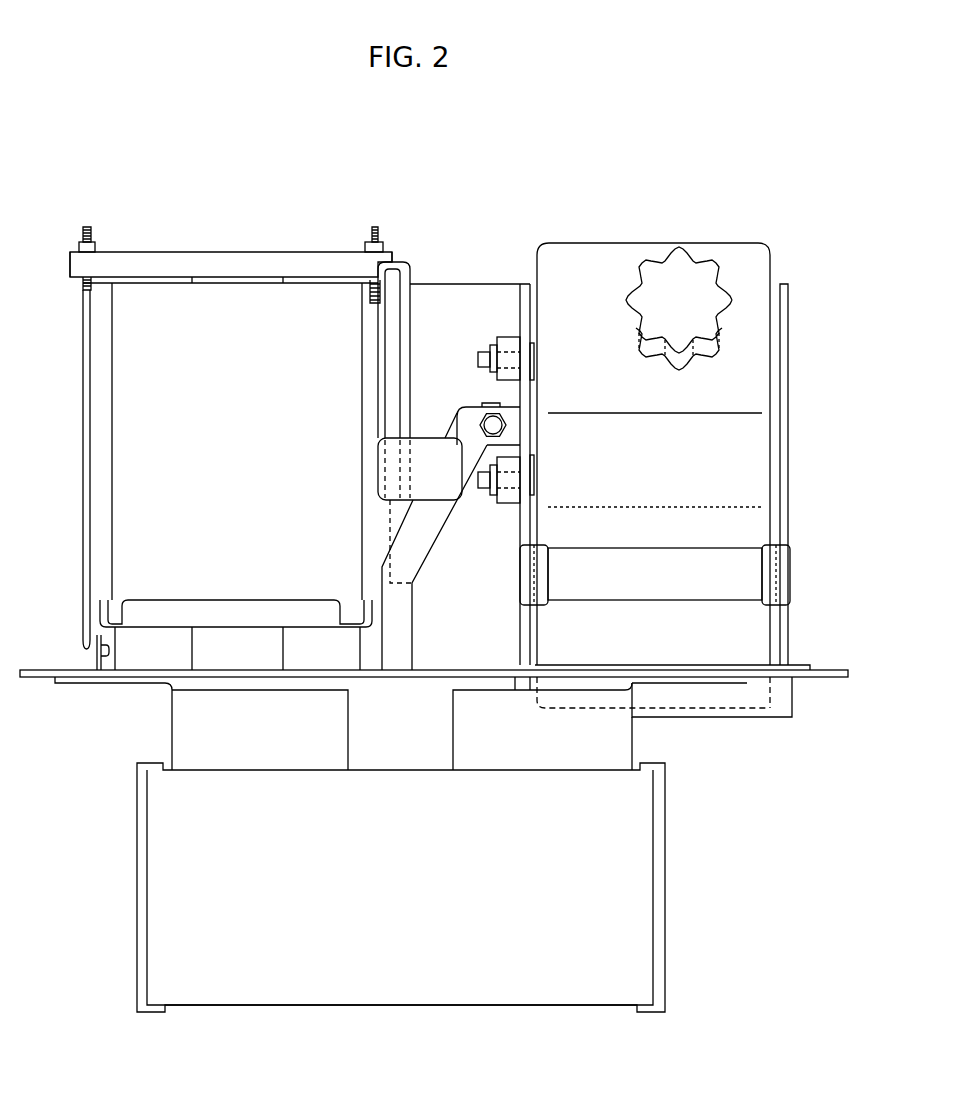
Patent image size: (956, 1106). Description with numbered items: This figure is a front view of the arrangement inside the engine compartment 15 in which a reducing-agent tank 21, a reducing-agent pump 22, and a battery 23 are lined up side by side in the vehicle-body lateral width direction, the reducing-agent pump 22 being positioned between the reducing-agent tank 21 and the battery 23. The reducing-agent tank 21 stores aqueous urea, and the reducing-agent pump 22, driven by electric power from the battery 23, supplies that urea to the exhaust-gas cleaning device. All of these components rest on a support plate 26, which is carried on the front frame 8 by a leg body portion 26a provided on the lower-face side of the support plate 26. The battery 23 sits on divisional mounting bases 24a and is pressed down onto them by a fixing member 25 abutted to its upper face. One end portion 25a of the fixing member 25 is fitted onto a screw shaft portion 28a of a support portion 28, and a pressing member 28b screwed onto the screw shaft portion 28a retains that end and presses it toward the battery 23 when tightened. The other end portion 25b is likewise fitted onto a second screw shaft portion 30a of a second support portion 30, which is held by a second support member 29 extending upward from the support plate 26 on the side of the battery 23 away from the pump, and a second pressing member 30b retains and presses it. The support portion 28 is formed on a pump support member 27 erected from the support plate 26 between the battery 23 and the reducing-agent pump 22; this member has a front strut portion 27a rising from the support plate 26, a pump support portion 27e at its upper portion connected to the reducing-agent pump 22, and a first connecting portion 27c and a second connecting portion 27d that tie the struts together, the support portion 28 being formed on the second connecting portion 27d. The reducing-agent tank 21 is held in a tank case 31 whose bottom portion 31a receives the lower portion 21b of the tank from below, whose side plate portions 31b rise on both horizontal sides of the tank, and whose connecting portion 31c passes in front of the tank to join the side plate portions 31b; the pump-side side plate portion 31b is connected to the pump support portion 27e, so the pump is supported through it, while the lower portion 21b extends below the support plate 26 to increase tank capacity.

The engine compartment 15 is at (150, 95).
The reducing-agent tank 21 is at (732, 240).
The lower portion 21b is at (710, 705).
The reducing-agent pump 22 is at (511, 281).
The battery 23 is at (108, 392).
The divisional mounting base 24a is at (308, 640).
The fixing member 25 is at (217, 250).
The one end portion 25a is at (380, 263).
The other end portion 25b is at (70, 264).
The support plate 26 is at (35, 680).
The leg body portion 26a is at (167, 727).
The pump support member 27 is at (378, 571).
The front strut portion 27a is at (427, 528).
The first connecting portion 27c is at (378, 460).
The second connecting portion 27d is at (405, 302).
The pump support portion 27e is at (496, 407).
The support portion 28 is at (353, 238).
The screw shaft portion 28a is at (370, 290).
The pressing member 28b is at (365, 247).
The second support member 29 is at (83, 448).
The second support portion 30 is at (105, 238).
The second screw shaft portion 30a is at (90, 282).
The second pressing member 30b is at (96, 248).
The tank case 31 is at (795, 464).
The bottom portion 31a is at (792, 694).
The side plate portion 31b is at (522, 310).
The connecting portion 31c is at (648, 563).
The front frame 8 is at (665, 910).